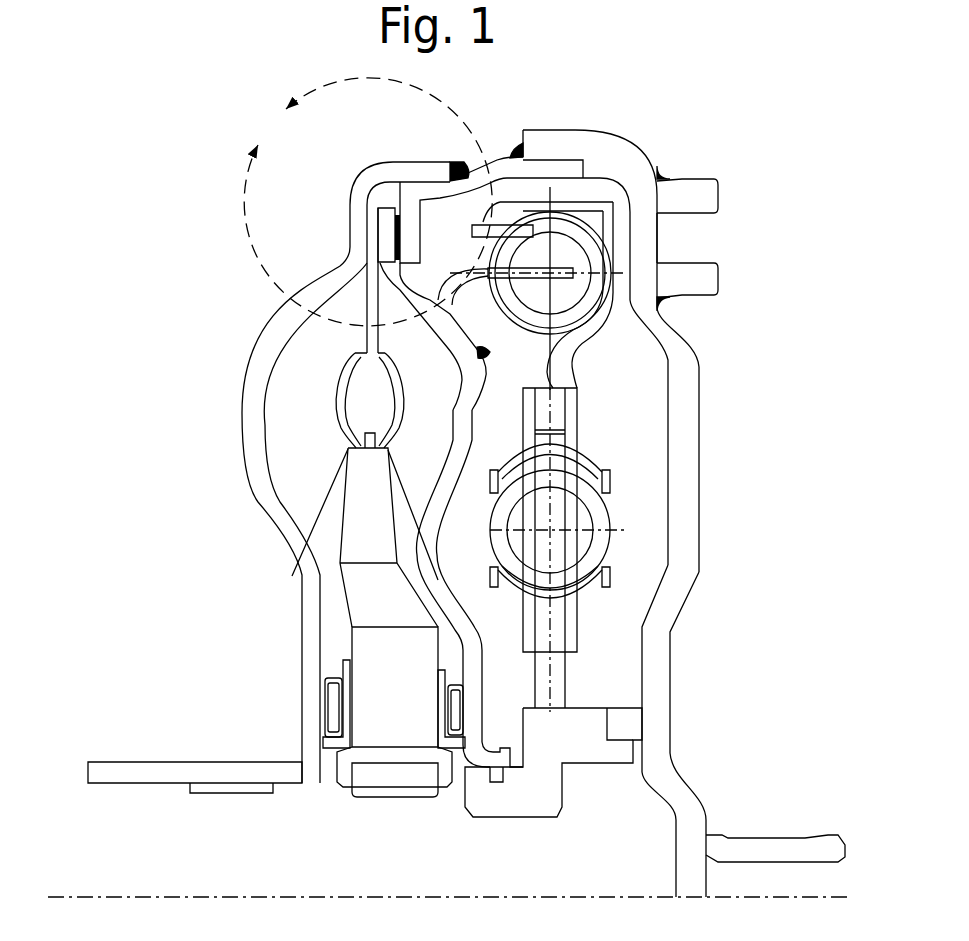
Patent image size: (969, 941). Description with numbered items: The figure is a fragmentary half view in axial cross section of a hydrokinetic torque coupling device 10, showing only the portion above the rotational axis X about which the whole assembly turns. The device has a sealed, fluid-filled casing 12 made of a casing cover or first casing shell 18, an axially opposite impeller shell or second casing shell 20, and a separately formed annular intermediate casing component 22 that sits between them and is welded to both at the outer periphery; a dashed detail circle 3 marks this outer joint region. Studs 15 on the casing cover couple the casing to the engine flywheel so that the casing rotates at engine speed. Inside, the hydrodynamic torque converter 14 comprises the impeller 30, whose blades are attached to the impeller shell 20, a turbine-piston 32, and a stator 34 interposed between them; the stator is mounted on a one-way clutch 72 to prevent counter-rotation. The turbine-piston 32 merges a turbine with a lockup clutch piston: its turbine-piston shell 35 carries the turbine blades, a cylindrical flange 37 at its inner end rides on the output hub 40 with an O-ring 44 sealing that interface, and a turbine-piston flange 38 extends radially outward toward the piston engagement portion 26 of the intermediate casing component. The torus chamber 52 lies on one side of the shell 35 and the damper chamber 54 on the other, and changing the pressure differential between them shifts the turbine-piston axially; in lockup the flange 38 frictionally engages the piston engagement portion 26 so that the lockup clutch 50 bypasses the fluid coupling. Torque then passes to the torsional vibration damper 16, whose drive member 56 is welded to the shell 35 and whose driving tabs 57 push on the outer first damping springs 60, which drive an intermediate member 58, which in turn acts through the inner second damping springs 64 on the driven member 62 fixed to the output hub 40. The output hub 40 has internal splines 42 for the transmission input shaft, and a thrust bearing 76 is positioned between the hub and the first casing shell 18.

The hydrokinetic torque coupling device 10 is at (736, 147).
The sealed casing 12 is at (650, 145).
The hydrodynamic torque converter 14 is at (259, 330).
The studs 15 is at (712, 197).
The torsional vibration damper 16 is at (587, 366).
The casing cover 18 is at (705, 487).
The impeller shell 20 is at (246, 485).
The intermediate casing component 22 is at (491, 157).
The piston engagement portion 26 is at (400, 268).
The impeller 30 is at (266, 440).
The turbine-piston 32 is at (472, 440).
The stator 34 is at (340, 542).
The turbine-piston shell 35 is at (463, 510).
The substantially cylindrical flange 37 is at (497, 752).
The turbine-piston flange 38 is at (387, 220).
The output hub 40 is at (548, 743).
The internal splines 42 is at (512, 812).
The O-ring 44 is at (487, 773).
The lockup clutch 50 is at (432, 217).
The torus chamber 52 is at (379, 414).
The damper chamber 54 is at (640, 447).
The drive member 56 is at (490, 347).
The driving tabs 57 is at (520, 270).
The intermediate member 58 is at (612, 235).
The first circumferential elastic damping members 60 is at (603, 330).
The driven member 62 is at (555, 680).
The second circumferential elastic damping members 64 is at (598, 508).
The one-way clutch 72 is at (409, 707).
The thrust bearing 76 is at (633, 723).
The detail view indicator 3 is at (368, 202).
The rotational axis X is at (73, 897).